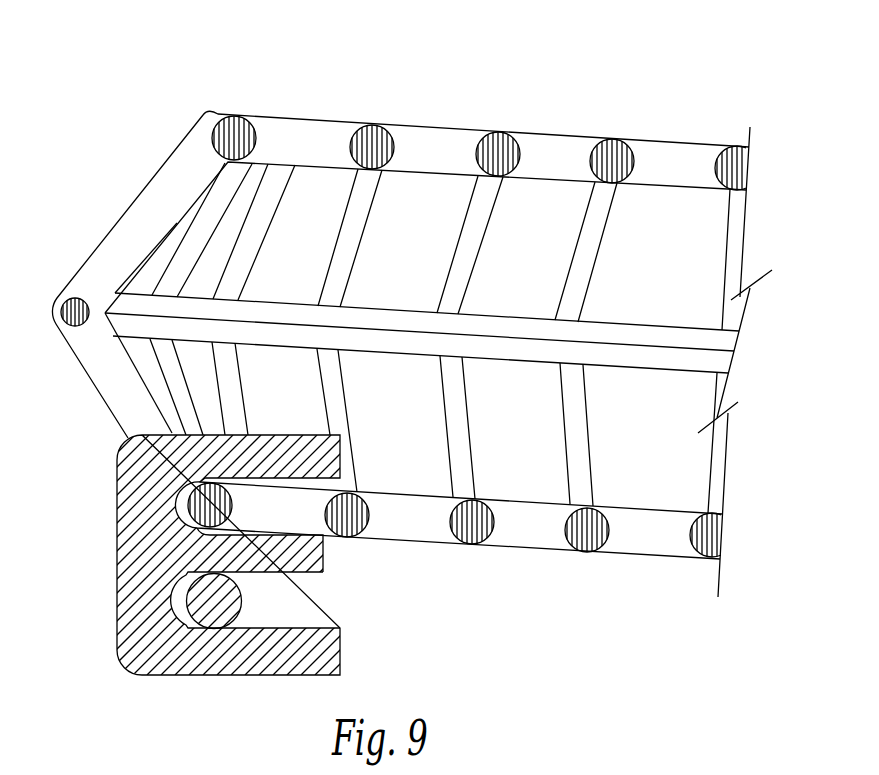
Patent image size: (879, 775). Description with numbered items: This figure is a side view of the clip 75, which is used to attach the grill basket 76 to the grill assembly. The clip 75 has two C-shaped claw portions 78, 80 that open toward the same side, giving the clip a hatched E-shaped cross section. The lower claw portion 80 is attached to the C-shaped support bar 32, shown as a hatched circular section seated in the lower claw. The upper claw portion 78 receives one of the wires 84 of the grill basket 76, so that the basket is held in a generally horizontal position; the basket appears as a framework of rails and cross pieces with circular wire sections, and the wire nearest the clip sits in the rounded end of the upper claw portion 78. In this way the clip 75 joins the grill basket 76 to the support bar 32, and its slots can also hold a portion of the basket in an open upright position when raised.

The grill basket 76 is at (533, 50).
The clip 75 is at (68, 497).
The C-shaped claw portion 78 is at (307, 517).
The wires 84 is at (539, 533).
The C-shaped claw portion 80 is at (322, 605).
The C-shaped support bar 32 is at (213, 612).